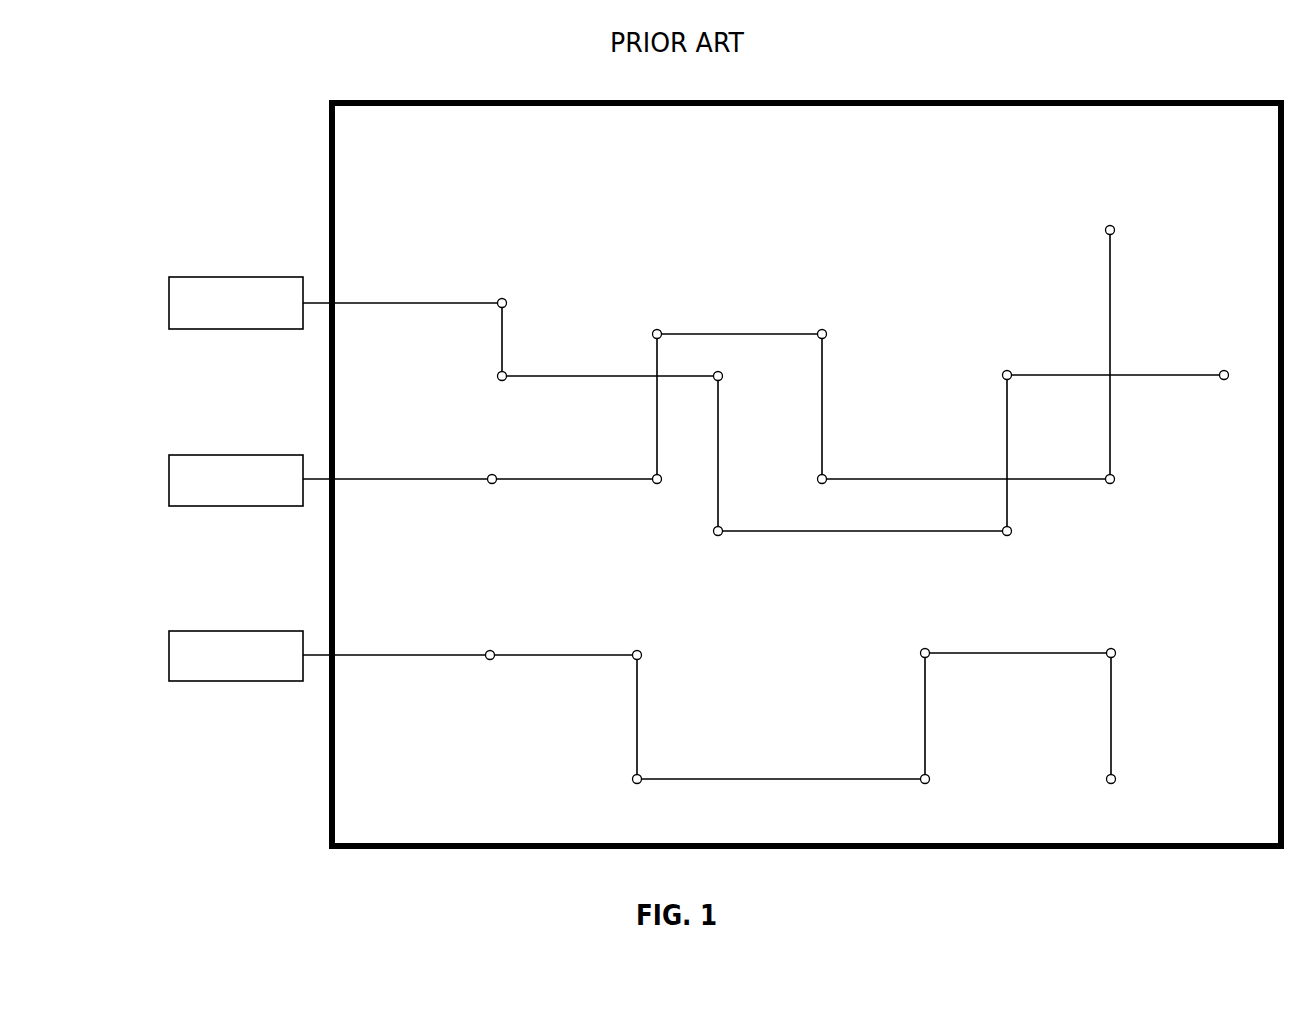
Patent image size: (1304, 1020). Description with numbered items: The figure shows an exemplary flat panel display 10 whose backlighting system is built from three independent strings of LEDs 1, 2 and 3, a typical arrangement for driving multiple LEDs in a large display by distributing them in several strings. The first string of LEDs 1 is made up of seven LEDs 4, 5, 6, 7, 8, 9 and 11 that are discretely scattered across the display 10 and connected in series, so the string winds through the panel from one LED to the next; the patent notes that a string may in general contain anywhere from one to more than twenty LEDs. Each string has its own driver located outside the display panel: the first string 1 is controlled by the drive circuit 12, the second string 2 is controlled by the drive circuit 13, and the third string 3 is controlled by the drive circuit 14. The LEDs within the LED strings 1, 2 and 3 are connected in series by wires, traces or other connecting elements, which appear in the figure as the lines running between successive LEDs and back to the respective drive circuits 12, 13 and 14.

The first string of LEDs 1 is at (362, 302).
The second string of LEDs 2 is at (362, 478).
The third string of LEDs 3 is at (352, 654).
The LED 4 is at (504, 300).
The LED 5 is at (504, 373).
The LED 6 is at (721, 373).
The LED 7 is at (721, 527).
The LED 8 is at (1014, 540).
The LED 9 is at (1003, 372).
The flat panel display 10 is at (1218, 150).
The LED 11 is at (1227, 378).
The drive circuit 12 is at (293, 306).
The drive circuit 13 is at (293, 483).
The drive circuit 14 is at (293, 659).